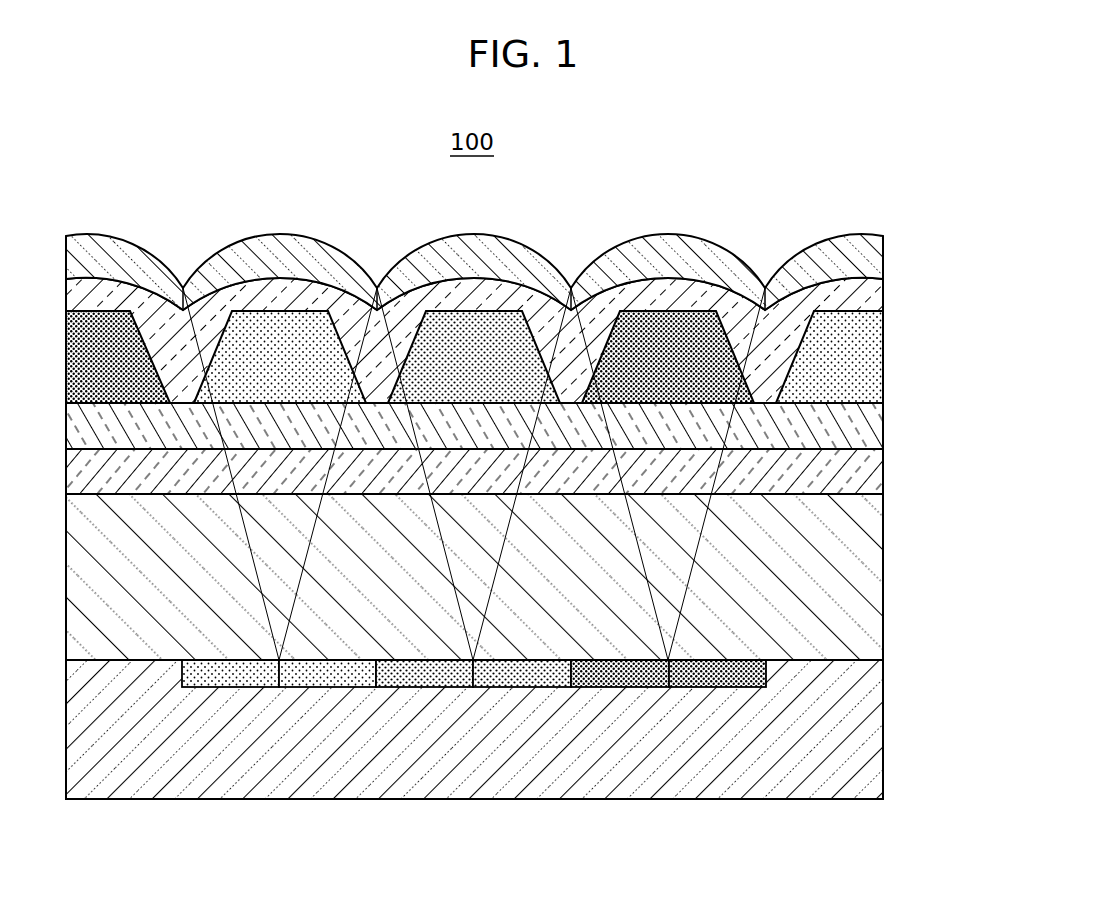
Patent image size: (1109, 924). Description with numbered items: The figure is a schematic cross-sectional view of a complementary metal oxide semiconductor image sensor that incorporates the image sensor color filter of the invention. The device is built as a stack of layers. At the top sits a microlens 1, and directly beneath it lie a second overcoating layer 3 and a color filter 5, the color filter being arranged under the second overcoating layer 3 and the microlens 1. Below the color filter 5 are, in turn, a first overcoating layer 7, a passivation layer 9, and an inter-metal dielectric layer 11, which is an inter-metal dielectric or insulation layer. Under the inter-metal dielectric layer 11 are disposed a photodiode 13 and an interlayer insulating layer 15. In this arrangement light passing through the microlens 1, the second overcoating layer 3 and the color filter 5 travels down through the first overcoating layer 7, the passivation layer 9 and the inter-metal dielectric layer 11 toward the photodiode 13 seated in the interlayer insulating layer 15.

The microlens 1 is at (880, 250).
The second overcoating layer 3 is at (878, 294).
The color filter 5 is at (877, 357).
The first overcoating layer 7 is at (875, 425).
The passivation layer 9 is at (875, 470).
The inter-metal dielectric layer 11 is at (870, 568).
The photodiode 13 is at (766, 670).
The interlayer insulating layer 15 is at (875, 764).